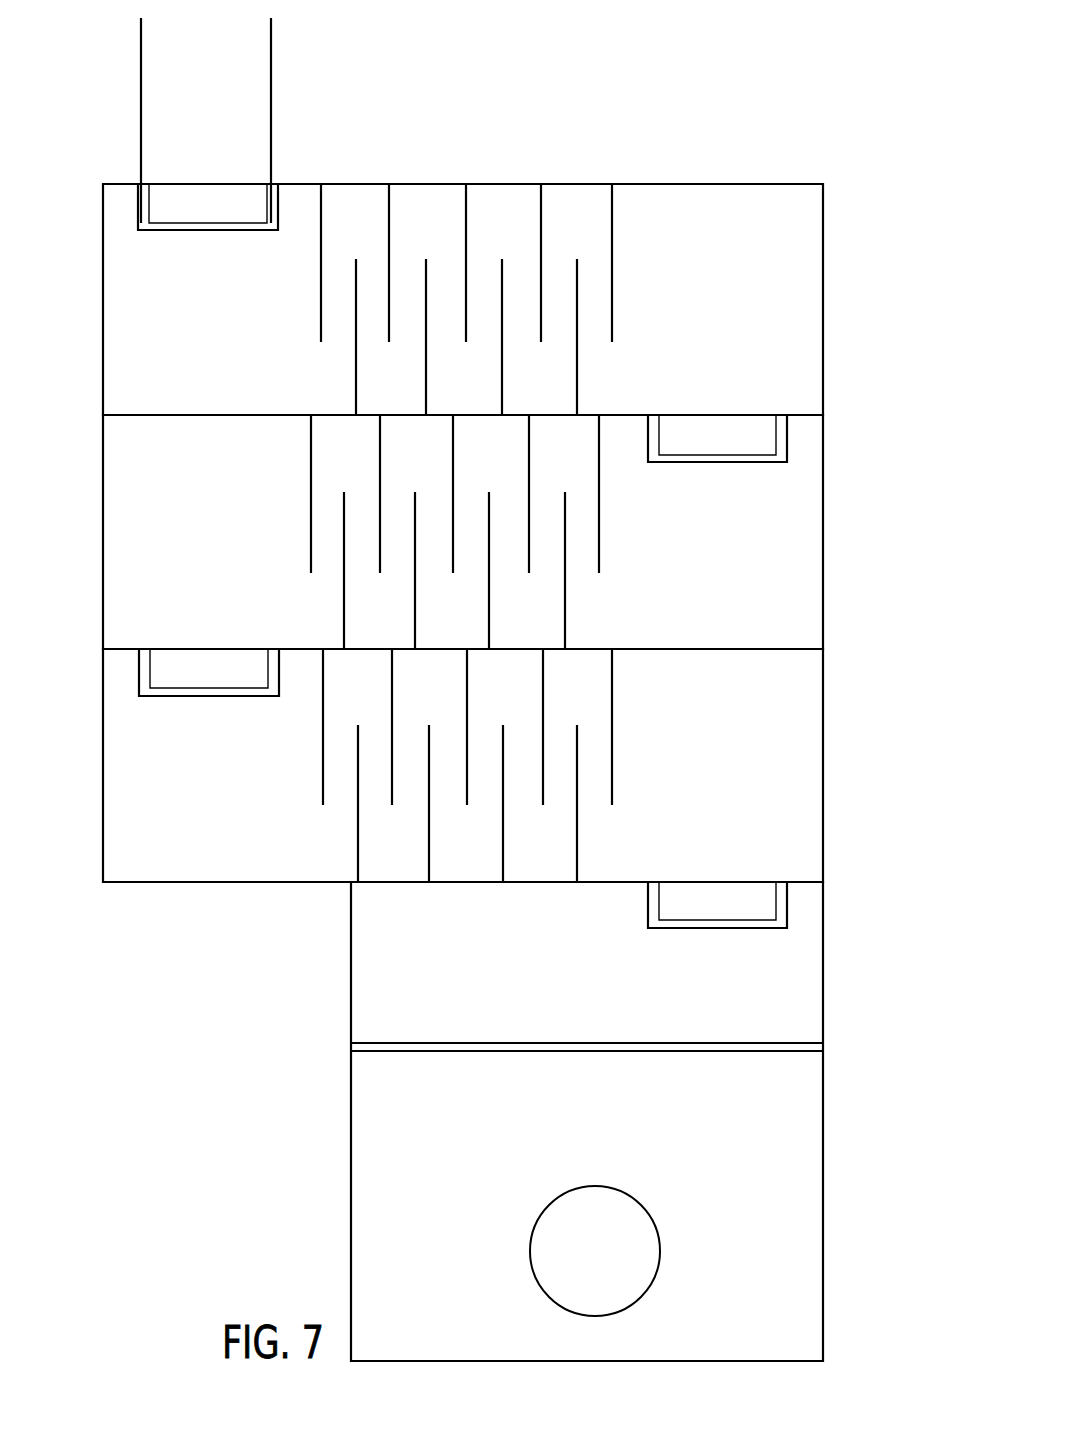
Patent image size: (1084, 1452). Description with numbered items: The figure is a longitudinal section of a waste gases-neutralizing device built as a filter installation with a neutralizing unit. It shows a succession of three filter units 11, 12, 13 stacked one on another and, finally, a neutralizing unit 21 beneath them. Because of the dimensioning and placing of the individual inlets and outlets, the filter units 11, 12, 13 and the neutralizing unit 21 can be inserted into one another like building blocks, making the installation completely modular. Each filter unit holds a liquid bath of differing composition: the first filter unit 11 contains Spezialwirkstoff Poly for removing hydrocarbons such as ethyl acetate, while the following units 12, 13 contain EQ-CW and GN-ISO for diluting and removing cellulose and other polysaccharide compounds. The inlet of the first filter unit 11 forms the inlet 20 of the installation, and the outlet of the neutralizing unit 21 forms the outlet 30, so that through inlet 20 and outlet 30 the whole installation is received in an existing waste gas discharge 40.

The filter unit 11 is at (823, 300).
The filter unit 12 is at (823, 528).
The filter unit 13 is at (823, 755).
The inlet 20 is at (190, 197).
The neutralizing unit 21 is at (823, 1150).
The outlet 30 is at (660, 1248).
The waste gas discharge 40 is at (141, 50).